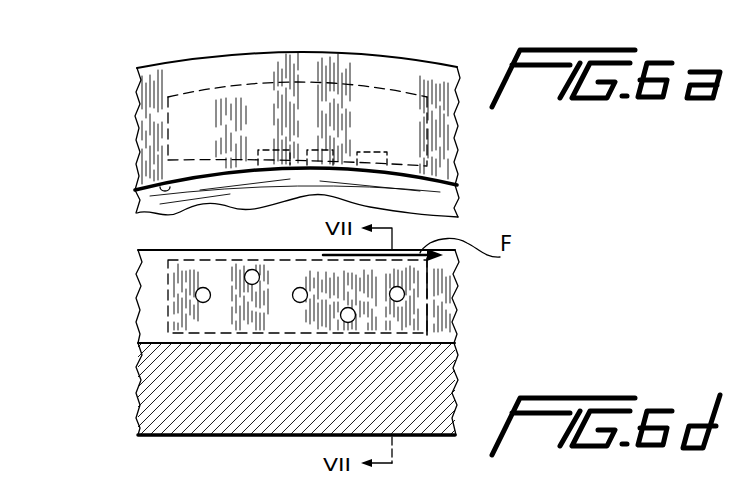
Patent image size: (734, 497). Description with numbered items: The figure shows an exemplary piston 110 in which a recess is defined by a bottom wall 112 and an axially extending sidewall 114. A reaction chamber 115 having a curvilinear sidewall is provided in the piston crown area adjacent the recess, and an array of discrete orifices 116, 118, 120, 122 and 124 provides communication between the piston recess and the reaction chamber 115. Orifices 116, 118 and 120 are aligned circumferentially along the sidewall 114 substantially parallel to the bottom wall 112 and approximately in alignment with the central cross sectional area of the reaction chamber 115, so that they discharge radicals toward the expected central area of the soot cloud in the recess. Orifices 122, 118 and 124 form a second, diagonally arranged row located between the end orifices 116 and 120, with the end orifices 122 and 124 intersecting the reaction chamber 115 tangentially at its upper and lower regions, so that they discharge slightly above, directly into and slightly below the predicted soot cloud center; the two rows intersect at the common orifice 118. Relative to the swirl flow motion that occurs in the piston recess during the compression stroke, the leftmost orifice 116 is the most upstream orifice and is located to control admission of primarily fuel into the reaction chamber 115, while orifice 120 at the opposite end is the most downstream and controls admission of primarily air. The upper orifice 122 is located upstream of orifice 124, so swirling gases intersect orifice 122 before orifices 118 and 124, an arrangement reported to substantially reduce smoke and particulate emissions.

In FIG. 6a, the piston 110 is at (150, 201).
In FIG. 6b, the piston 110 is at (167, 438).
In FIG. 6b, the bottom wall 112 is at (138, 342).
In FIG. 6a, the axially extending sidewall 114 is at (157, 185).
In FIG. 6b, the axially extending sidewall 114 is at (152, 292).
In FIG. 6a, the reaction chamber 115 is at (192, 100).
In FIG. 6b, the reaction chamber 115 is at (292, 285).
In FIG. 6a, the orifice 116 is at (195, 167).
In FIG. 6b, the orifice 116 is at (196, 300).
In FIG. 6a, the orifice 118 is at (303, 166).
In FIG. 6b, the orifice 118 is at (293, 301).
In FIG. 6a, the orifice 120 is at (387, 167).
In FIG. 6b, the orifice 120 is at (405, 297).
In FIG. 6a, the orifice 122 is at (243, 157).
In FIG. 6b, the orifice 122 is at (245, 276).
In FIG. 6a, the orifice 124 is at (340, 167).
In FIG. 6b, the orifice 124 is at (356, 316).